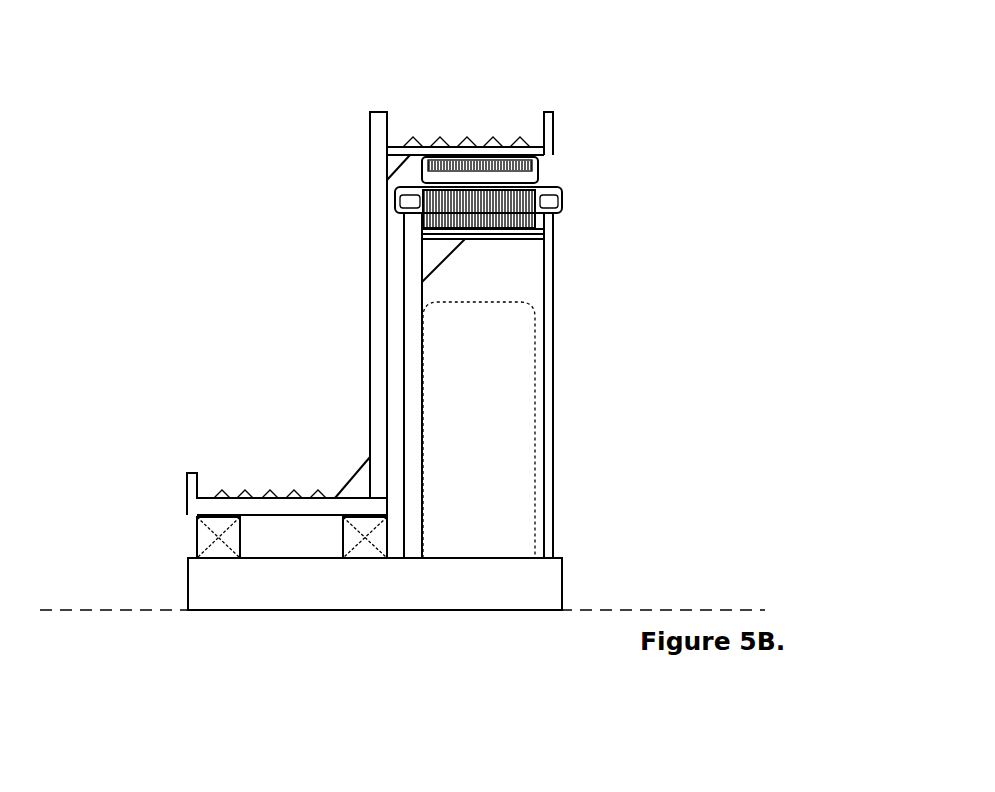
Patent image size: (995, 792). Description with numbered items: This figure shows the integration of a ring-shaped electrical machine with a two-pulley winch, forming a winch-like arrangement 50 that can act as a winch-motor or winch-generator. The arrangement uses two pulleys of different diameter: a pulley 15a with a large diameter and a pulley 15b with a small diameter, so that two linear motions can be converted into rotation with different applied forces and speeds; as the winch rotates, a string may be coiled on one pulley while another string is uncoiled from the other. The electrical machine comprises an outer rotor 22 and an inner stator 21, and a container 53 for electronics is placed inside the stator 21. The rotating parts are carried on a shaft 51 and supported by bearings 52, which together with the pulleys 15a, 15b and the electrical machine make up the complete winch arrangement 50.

The pulley 15a is at (447, 140).
The pulley 15b is at (258, 490).
The inner stator 21 is at (570, 212).
The outer rotor 22 is at (547, 170).
The winch-like arrangement 50 is at (322, 260).
The shaft 51 is at (203, 578).
The bearings 52 is at (170, 530).
The container for electronics 53 is at (510, 352).